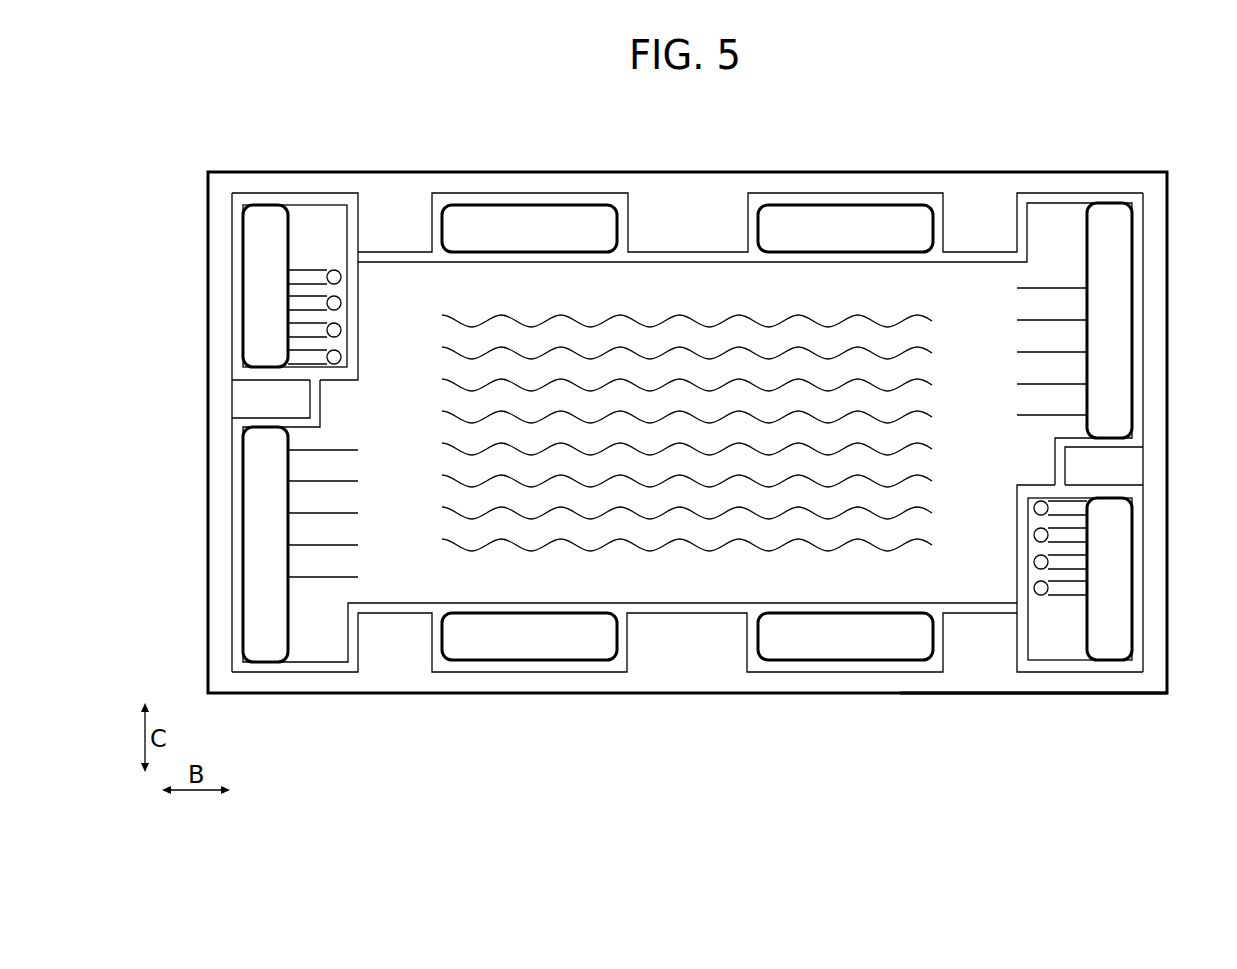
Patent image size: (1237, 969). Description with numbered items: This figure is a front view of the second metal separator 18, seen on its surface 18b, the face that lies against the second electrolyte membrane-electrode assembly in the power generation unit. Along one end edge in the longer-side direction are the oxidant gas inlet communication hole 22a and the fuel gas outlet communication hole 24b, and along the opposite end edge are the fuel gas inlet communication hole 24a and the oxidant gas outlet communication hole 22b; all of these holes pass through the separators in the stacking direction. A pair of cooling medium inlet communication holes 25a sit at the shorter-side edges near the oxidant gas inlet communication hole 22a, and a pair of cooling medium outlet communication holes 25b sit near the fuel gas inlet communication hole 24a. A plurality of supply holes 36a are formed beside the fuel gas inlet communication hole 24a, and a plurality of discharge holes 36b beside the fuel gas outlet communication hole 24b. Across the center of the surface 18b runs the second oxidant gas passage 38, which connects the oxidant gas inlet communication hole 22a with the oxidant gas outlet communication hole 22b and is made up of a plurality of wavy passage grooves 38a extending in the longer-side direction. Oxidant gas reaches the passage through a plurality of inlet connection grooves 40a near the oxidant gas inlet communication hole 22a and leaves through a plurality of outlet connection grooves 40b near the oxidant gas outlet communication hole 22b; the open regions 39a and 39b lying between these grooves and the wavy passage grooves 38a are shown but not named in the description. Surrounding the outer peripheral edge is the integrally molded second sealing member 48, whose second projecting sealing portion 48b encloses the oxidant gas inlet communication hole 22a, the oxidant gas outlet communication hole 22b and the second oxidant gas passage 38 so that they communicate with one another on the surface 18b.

The second metal separator 18 is at (762, 105).
The surface 18b is at (981, 665).
The oxidant gas inlet communication hole 22a is at (1104, 300).
The oxidant gas outlet communication hole 22b is at (263, 515).
The fuel gas inlet communication hole 24a is at (263, 300).
The fuel gas outlet communication hole 24b is at (1120, 575).
The cooling medium inlet communication holes 25a is at (848, 218).
The cooling medium outlet communication holes 25b is at (527, 218).
The supply holes 36a is at (336, 302).
The discharge holes 36b is at (1039, 564).
The second oxidant gas passage 38 is at (687, 338).
The wavy passage grooves 38a is at (697, 387).
The bypass region 39a is at (413, 482).
The bypass region 39b is at (978, 345).
The inlet connection grooves 40a is at (1049, 300).
The outlet connection grooves 40b is at (325, 568).
The second sealing member 48 is at (687, 430).
The second projecting sealing portion 48b is at (697, 612).